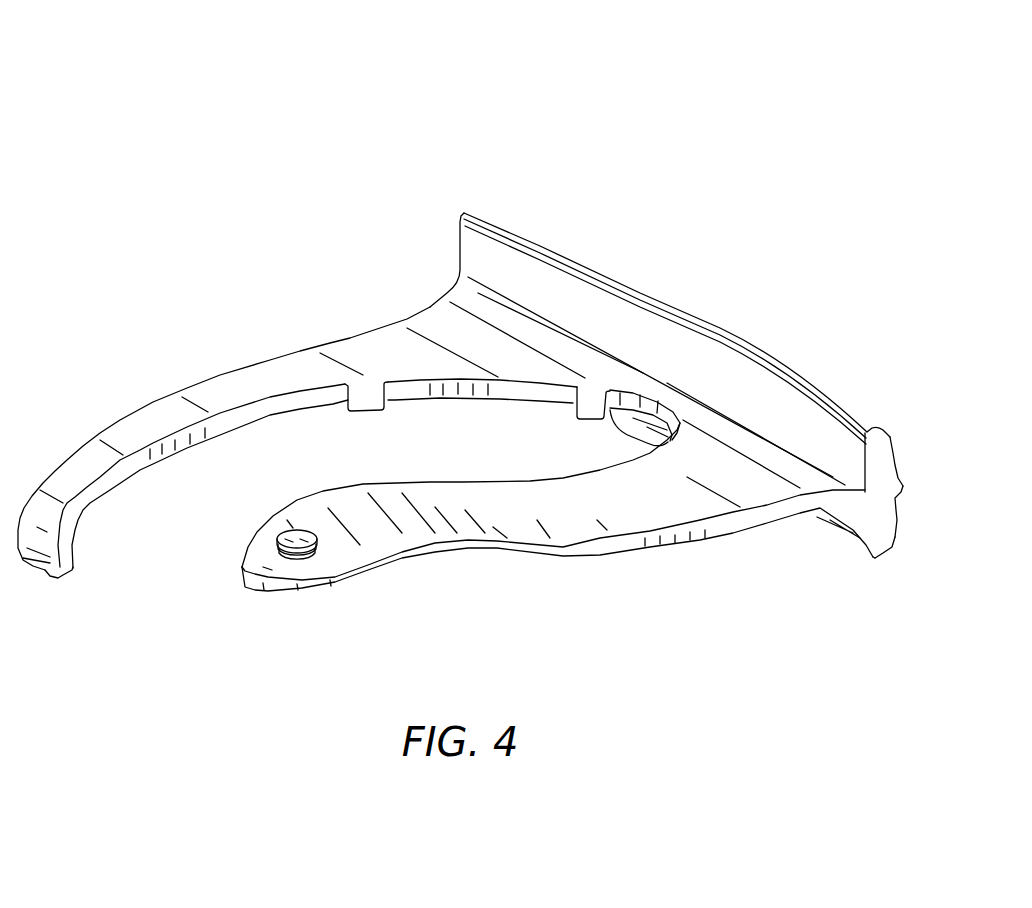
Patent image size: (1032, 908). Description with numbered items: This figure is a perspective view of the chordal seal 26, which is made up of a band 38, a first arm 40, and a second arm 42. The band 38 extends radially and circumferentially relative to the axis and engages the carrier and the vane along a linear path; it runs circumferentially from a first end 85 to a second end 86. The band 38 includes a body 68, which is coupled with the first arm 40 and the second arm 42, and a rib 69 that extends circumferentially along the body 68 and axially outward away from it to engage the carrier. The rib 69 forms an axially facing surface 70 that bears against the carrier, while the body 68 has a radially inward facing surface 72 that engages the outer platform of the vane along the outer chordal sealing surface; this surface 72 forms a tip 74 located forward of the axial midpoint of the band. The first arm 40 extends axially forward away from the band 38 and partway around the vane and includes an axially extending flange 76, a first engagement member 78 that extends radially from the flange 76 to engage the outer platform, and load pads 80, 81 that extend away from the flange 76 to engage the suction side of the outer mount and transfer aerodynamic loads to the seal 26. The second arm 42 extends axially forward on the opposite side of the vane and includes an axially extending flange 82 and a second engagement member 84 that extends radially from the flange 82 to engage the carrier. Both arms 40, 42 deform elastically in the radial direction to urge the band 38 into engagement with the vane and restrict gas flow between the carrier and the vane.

The chordal seal 26 is at (245, 120).
The band 38 is at (462, 209).
The first arm 40 is at (222, 343).
The second arm 42 is at (648, 568).
The body 68 is at (706, 310).
The rib 69 is at (917, 462).
The axially facing surface 70 is at (898, 485).
The radially inward facing surface 72 is at (884, 560).
The tip 74 is at (871, 574).
The axially extending flange 76 is at (188, 376).
The first engagement member 78 is at (55, 596).
The load pad 80 is at (335, 434).
The load pad 81 is at (565, 434).
The axially extending flange 82 is at (561, 575).
The second engagement member 84 is at (248, 567).
The first end 85 is at (445, 250).
The second end 86 is at (845, 452).